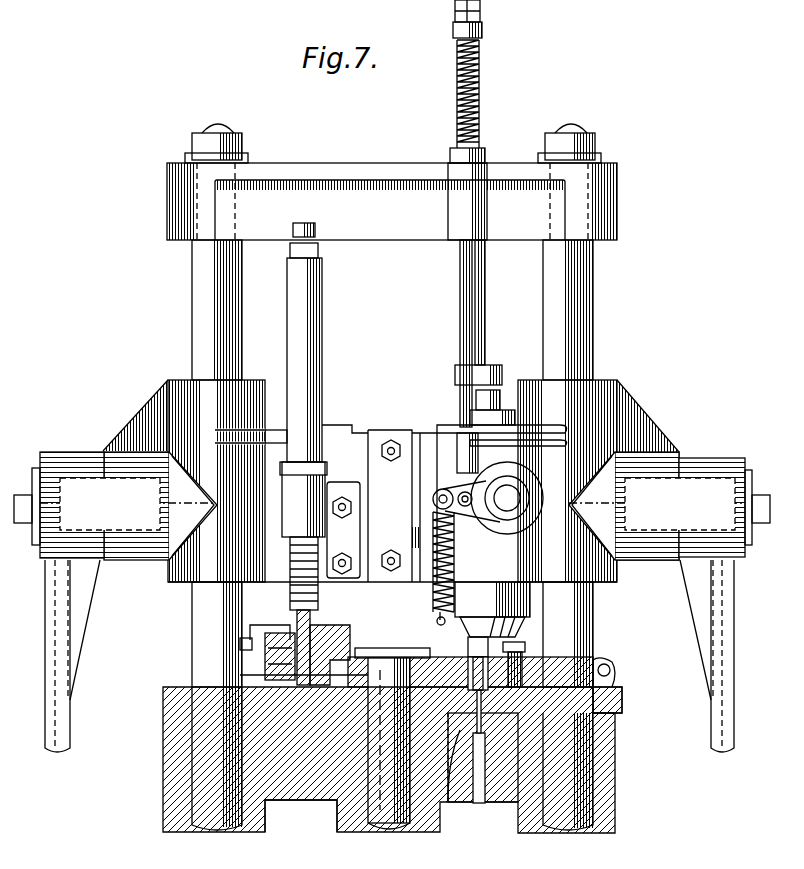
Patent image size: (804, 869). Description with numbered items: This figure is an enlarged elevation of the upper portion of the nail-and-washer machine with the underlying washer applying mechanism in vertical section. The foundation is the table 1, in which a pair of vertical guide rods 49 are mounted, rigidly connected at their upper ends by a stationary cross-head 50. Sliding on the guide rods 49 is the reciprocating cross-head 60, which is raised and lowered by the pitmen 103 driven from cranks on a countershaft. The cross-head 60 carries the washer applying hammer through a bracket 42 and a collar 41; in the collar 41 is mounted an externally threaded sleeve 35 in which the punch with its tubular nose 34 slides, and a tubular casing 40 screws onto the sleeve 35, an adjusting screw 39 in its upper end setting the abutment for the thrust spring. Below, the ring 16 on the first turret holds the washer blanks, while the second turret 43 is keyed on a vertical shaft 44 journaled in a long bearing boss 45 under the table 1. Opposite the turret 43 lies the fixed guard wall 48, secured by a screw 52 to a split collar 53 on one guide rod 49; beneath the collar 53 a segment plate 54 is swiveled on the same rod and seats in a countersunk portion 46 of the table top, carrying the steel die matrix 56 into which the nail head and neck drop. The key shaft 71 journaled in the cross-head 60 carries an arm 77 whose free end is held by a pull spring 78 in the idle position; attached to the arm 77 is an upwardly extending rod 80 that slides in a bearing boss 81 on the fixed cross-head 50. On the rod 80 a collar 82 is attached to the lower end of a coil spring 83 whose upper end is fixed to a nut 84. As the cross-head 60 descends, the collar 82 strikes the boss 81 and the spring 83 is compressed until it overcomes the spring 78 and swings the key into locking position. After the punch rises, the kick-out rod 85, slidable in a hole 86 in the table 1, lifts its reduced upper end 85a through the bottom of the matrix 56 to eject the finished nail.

The table 1 is at (600, 773).
The ring 16 is at (342, 630).
The tubular nose 34 is at (262, 625).
The externally threaded sleeve 35 is at (290, 596).
The adjusting screw 39 is at (308, 222).
The tubular casing 40 is at (318, 318).
The collar 41 is at (285, 495).
The bracket 42 is at (330, 520).
The second turret 43 is at (442, 657).
The vertical shaft 44 is at (392, 738).
The bearing boss 45 is at (345, 826).
The countersunk portion 46 is at (508, 715).
The guard wall 48 is at (522, 620).
The vertical guide rods 49 is at (200, 360).
The stationary cross-head 50 is at (362, 170).
The screw 52 is at (522, 648).
The split collar 53 is at (600, 658).
The segment plate 54 is at (622, 690).
The die matrix 56 is at (462, 792).
The reciprocating cross-head 60 is at (605, 423).
The key shaft 71 is at (518, 490).
The arm 77 is at (446, 489).
The pull spring 78 is at (455, 568).
The rod 80 is at (460, 312).
The bearing boss 81 is at (448, 214).
The collar 82 is at (487, 157).
The coil spring 83 is at (481, 80).
The nut 84 is at (483, 30).
The kick-out rod 85 is at (485, 805).
The reduced upper end 85a is at (450, 804).
The hole 86 is at (470, 800).
The pitmen 103 is at (66, 724).